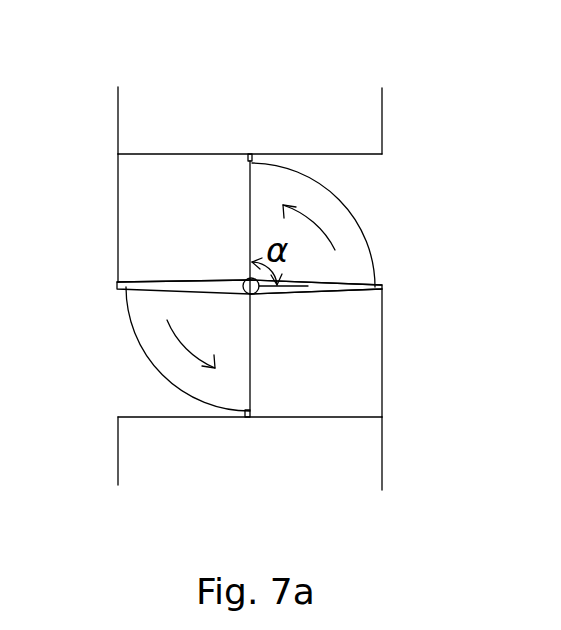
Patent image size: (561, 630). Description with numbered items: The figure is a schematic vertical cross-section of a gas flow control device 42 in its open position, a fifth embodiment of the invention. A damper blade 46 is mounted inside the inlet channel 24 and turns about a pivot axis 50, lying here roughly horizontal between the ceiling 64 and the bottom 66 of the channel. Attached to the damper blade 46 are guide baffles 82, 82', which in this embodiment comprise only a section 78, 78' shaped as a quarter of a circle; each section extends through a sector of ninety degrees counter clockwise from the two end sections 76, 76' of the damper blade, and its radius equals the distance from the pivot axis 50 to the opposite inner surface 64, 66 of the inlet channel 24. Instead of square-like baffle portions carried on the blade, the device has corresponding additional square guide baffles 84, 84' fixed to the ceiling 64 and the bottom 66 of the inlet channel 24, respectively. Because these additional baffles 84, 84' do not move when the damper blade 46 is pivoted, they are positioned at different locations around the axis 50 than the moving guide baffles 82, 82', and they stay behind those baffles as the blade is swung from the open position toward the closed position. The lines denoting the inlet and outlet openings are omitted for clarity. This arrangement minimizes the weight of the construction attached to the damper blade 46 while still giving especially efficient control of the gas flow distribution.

The inlet channel 24 is at (330, 417).
The gas flow control device 42 is at (322, 98).
The damper blade 46 is at (343, 282).
The pivot axis 50 is at (244, 290).
The ceiling of the inlet channel 64 is at (212, 154).
The bottom of the inlet channel 66 is at (282, 417).
The end section of the damper blade 76 is at (373, 315).
The end section of the damper blade 76' is at (132, 264).
The quarter-circle section of guide baffle 78 is at (366, 215).
The quarter-circle section of guide baffle 78' is at (146, 349).
The guide baffle 82 is at (256, 96).
The guide baffle 82' is at (209, 457).
The additional square guide baffle 84 is at (440, 367).
The additional square guide baffle 84' is at (75, 203).